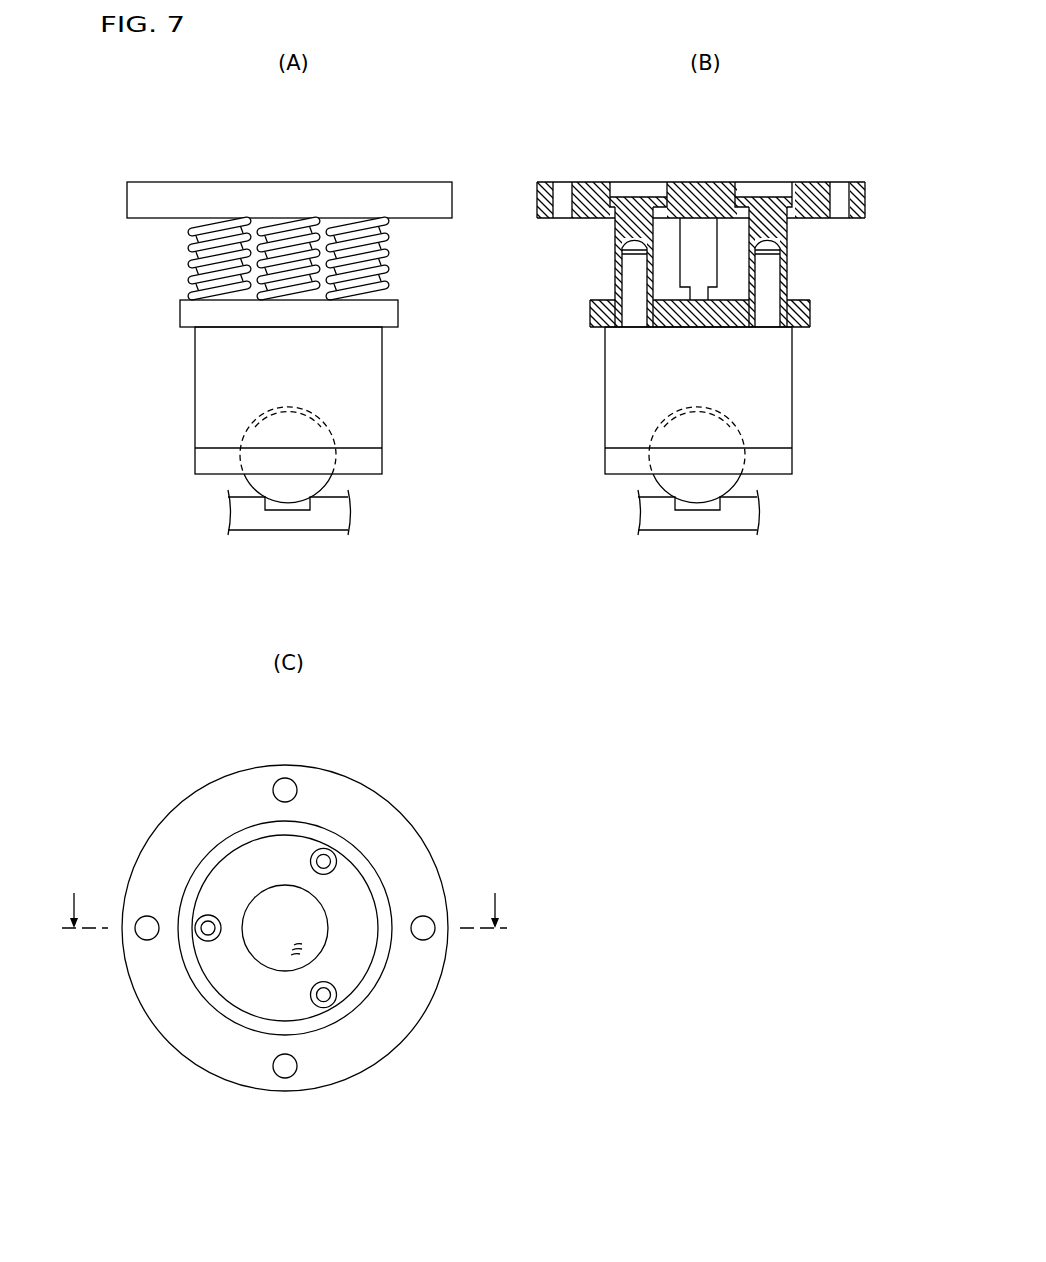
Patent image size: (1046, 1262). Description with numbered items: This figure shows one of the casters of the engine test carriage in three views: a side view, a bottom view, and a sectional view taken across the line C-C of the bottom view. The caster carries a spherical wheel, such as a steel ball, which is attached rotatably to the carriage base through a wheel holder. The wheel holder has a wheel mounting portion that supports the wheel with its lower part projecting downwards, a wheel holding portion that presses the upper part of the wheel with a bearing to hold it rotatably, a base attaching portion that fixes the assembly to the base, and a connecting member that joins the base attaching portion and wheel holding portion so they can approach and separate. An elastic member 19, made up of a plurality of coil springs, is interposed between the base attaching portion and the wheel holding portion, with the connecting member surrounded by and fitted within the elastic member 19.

The elastic member 19 is at (362, 143).